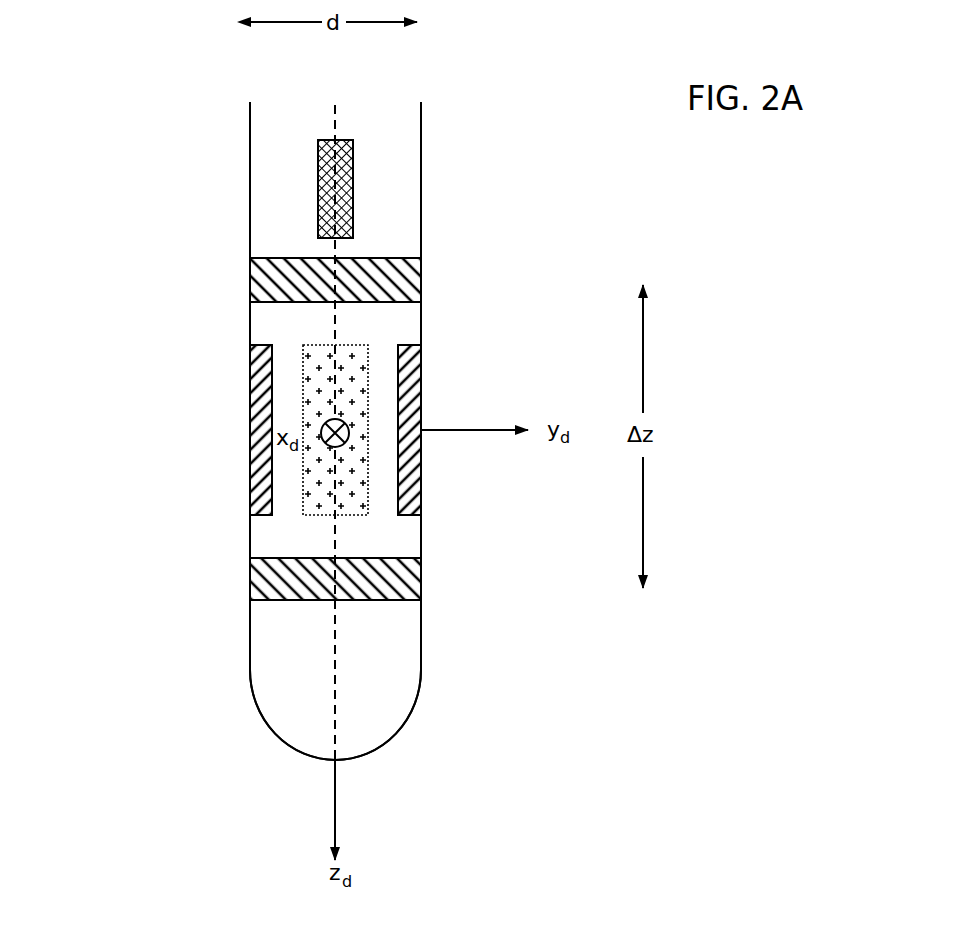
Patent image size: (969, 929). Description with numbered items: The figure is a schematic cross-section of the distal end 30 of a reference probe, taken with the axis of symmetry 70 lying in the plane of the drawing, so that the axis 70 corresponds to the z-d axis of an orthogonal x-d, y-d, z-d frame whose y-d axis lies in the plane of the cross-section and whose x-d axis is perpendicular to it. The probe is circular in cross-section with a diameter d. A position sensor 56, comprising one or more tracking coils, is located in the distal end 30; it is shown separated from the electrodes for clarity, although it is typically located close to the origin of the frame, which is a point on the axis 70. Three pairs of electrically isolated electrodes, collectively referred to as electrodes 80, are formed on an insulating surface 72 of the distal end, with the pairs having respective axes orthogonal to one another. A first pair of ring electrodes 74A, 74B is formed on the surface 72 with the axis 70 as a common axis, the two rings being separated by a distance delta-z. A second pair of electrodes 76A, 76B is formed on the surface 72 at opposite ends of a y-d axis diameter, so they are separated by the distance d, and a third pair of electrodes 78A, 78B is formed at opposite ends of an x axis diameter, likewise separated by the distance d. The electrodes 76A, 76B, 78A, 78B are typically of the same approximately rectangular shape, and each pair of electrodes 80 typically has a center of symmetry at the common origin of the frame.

The electrodes 80 is at (168, 287).
The insulating surface 72 is at (250, 130).
The distal end 30 is at (250, 532).
The axis of symmetry 70 is at (333, 113).
The position sensor 56 is at (352, 155).
The first pair electrode 74A is at (421, 577).
The first pair electrode 74B is at (421, 283).
The second pair electrode 76A is at (421, 365).
The second pair electrode 76B is at (250, 382).
The third pair electrode 78A is at (357, 515).
The third pair electrode 78B is at (435, 462).